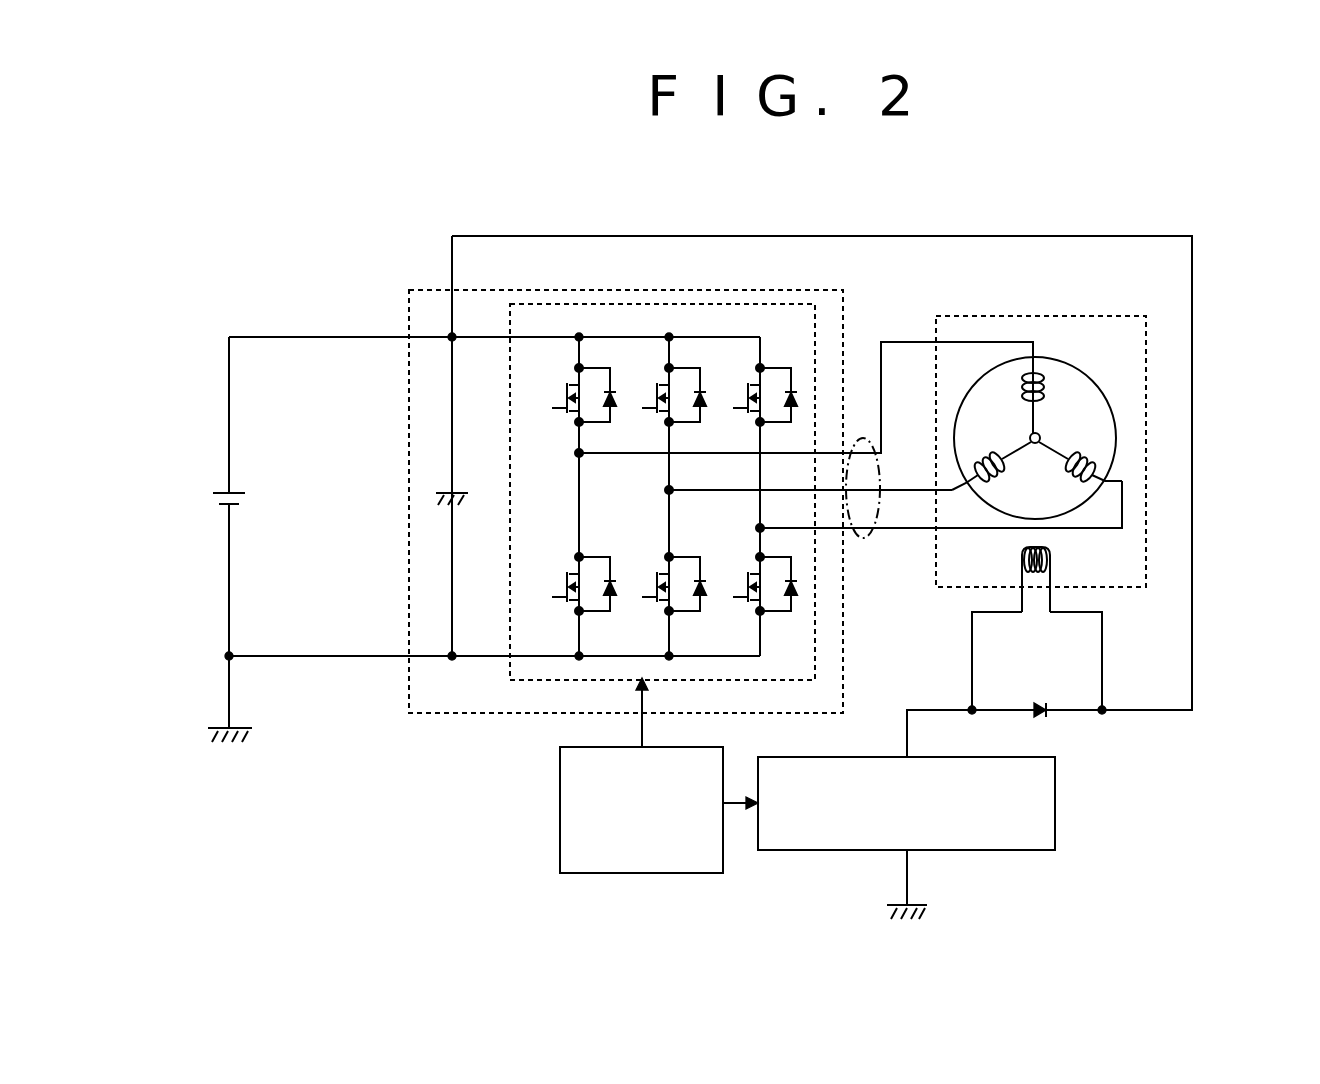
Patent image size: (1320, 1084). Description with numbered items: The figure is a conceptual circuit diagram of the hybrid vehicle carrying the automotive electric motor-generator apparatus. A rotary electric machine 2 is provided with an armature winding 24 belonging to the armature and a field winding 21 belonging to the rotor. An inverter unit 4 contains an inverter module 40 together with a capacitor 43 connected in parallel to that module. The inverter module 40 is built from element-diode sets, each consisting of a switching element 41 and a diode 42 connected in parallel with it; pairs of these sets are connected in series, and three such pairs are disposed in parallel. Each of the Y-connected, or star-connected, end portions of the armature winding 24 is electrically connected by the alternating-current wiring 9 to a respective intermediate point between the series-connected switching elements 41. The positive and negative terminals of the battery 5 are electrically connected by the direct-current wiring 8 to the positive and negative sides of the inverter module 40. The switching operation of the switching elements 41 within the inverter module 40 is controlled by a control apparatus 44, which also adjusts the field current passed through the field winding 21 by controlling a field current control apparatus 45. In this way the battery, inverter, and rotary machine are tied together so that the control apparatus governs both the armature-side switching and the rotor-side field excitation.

The rotary electric machine 2 is at (1047, 476).
The inverter unit 4 is at (848, 308).
The battery 5 is at (250, 501).
The direct-current wiring 8 is at (318, 345).
The alternating-current wiring 9 is at (875, 540).
The field winding 21 is at (1063, 563).
The armature winding 24 is at (1090, 365).
The inverter module 40 is at (664, 460).
The switching element 41 is at (561, 571).
The diode 42 is at (622, 575).
The capacitor 43 is at (470, 512).
The control apparatus 44 is at (557, 807).
The field current control apparatus 45 is at (1062, 806).